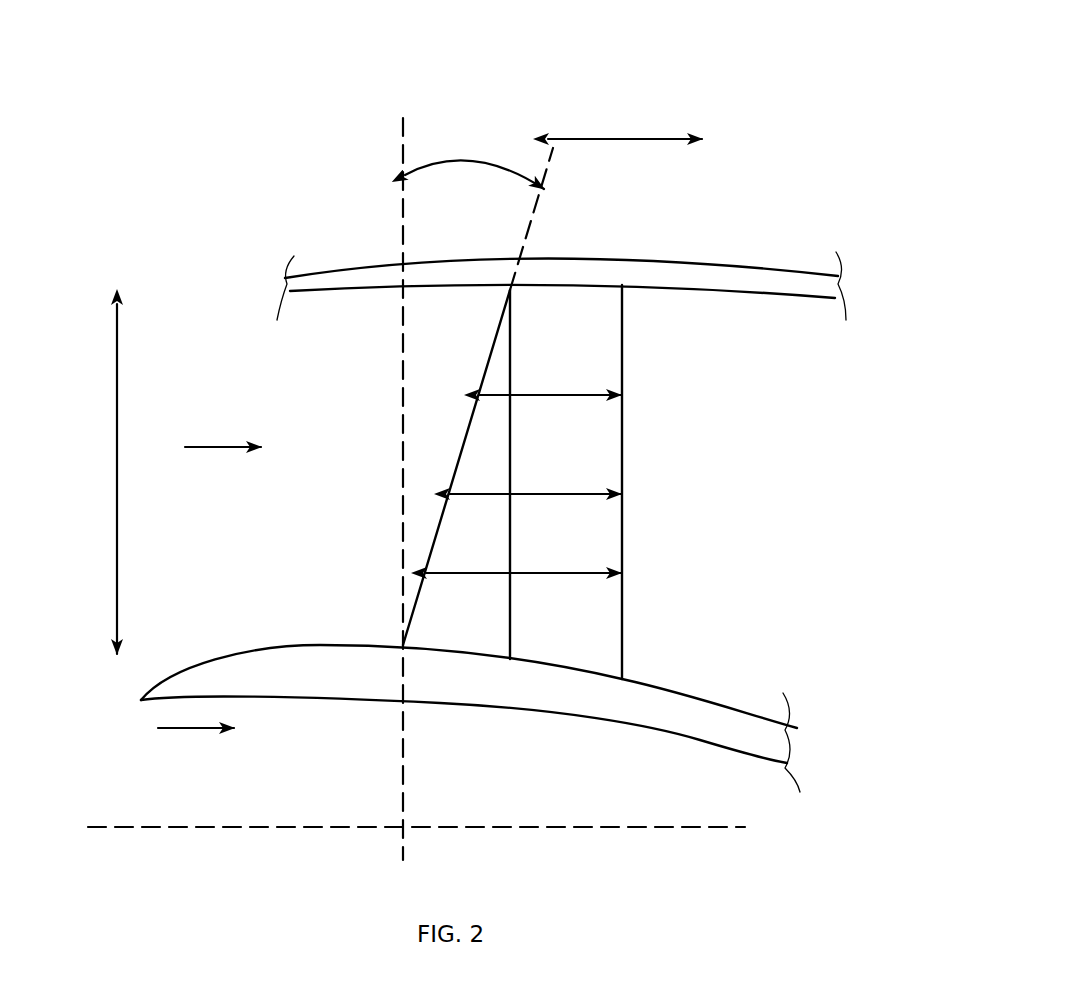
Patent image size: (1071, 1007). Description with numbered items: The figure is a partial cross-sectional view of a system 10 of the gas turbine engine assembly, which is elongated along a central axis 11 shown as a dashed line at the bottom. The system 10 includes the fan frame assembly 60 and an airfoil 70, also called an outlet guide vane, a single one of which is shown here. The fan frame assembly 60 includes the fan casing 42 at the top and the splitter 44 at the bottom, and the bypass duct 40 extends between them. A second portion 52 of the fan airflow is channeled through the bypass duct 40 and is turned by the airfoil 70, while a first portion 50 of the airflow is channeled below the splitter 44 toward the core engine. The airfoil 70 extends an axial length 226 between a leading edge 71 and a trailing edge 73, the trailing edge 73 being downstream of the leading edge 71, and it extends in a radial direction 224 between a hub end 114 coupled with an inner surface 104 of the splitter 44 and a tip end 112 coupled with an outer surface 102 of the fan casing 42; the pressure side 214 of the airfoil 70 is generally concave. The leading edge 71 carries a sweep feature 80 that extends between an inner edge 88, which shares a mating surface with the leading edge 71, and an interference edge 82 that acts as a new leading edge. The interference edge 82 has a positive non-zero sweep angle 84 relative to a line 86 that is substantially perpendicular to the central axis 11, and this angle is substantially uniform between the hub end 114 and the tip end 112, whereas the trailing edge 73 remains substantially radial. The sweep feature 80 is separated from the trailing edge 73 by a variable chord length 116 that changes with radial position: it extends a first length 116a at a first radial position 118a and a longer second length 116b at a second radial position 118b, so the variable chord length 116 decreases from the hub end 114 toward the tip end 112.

The system 10 is at (708, 67).
The central axis 11 is at (569, 827).
The bypass duct 40 is at (319, 462).
The fan casing 42 is at (678, 268).
The splitter 44 is at (716, 725).
The first portion of airflow 50 is at (189, 728).
The second portion of airflow 52 is at (218, 447).
The fan frame assembly 60 is at (394, 217).
The airfoil 70 is at (434, 366).
The leading edge 71 is at (510, 425).
The trailing edge 73 is at (622, 467).
The sweep feature 80 is at (426, 558).
The interference edge 82 is at (437, 530).
The sweep angle 84 is at (475, 160).
The line 86 is at (403, 128).
The inner edge 88 is at (514, 615).
The outer surface 102 is at (721, 296).
The inner surface 104 is at (657, 687).
The tip end 112 is at (579, 292).
The hub end 114 is at (572, 667).
The variable chord length 116 is at (543, 495).
The first length 116a is at (577, 398).
The second length 116b is at (582, 571).
The first radial position 118a is at (622, 395).
The second radial position 118b is at (622, 573).
The pressure side 214 is at (558, 457).
The radial direction 224 is at (117, 437).
The axial length 226 is at (626, 139).